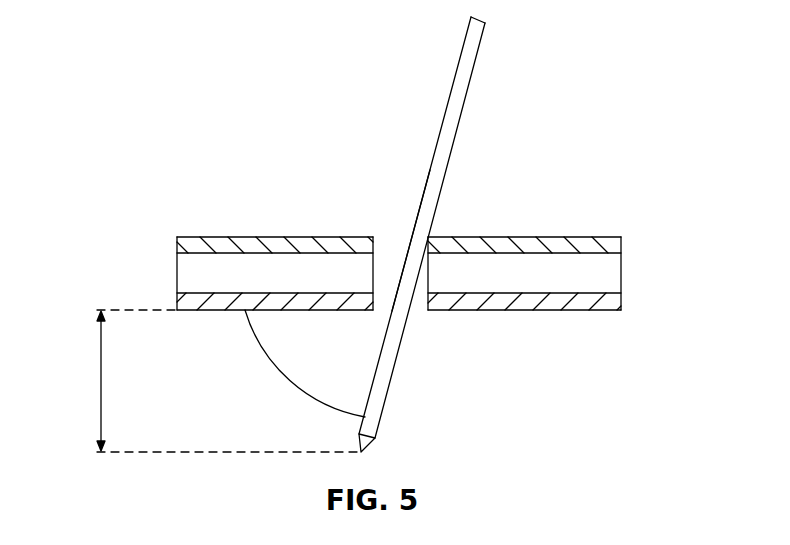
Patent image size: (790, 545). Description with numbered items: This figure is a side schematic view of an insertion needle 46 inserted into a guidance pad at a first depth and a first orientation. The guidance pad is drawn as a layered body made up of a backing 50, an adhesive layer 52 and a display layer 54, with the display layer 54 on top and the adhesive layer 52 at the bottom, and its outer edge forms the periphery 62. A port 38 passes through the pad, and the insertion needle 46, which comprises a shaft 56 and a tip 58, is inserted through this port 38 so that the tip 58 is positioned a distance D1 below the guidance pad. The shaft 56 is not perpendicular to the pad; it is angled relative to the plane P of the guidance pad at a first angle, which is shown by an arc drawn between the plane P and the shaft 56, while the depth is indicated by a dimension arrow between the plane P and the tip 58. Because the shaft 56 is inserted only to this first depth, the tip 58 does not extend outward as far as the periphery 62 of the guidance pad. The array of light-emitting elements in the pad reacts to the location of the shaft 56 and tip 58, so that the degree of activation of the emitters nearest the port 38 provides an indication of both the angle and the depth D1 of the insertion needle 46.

The port 38 is at (373, 272).
The insertion needle 46 is at (441, 248).
The backing 50 is at (621, 272).
The adhesive layer 52 is at (621, 299).
The display layer 54 is at (621, 243).
The shaft 56 is at (401, 342).
The tip 58 is at (373, 443).
The periphery 62 is at (177, 242).
The plane P is at (158, 308).
The distance D1 is at (101, 380).